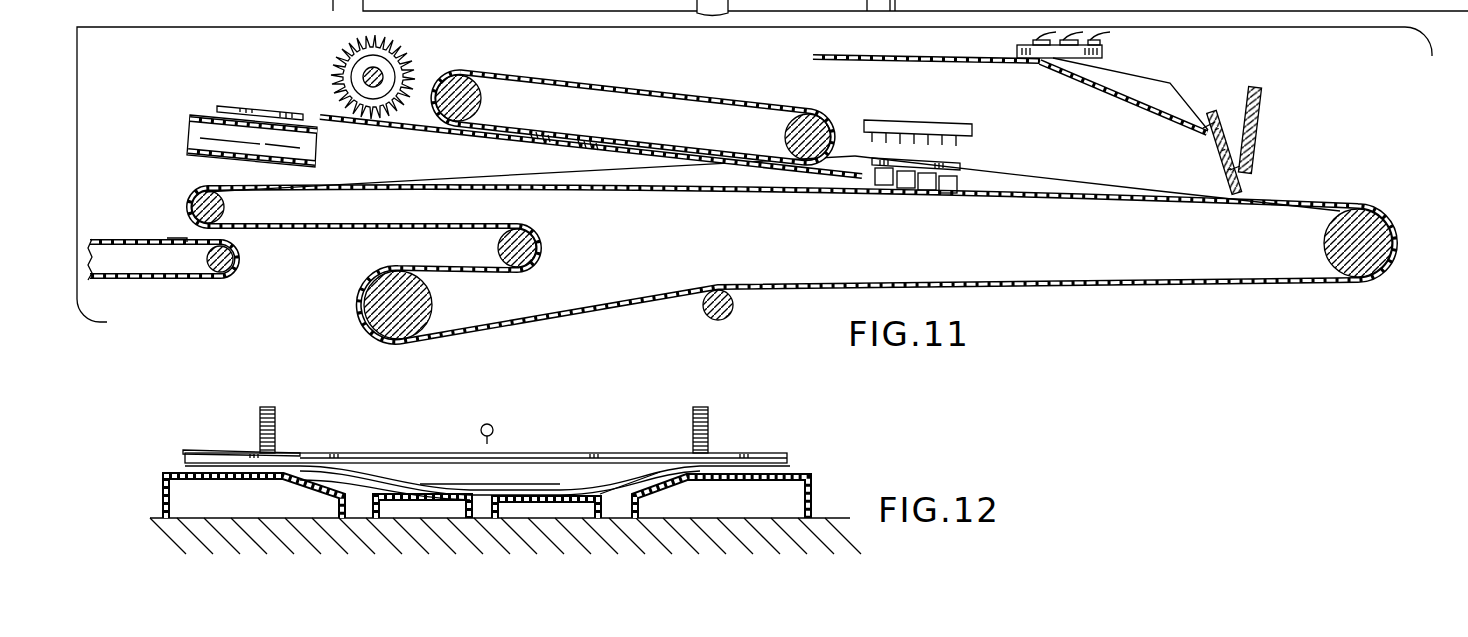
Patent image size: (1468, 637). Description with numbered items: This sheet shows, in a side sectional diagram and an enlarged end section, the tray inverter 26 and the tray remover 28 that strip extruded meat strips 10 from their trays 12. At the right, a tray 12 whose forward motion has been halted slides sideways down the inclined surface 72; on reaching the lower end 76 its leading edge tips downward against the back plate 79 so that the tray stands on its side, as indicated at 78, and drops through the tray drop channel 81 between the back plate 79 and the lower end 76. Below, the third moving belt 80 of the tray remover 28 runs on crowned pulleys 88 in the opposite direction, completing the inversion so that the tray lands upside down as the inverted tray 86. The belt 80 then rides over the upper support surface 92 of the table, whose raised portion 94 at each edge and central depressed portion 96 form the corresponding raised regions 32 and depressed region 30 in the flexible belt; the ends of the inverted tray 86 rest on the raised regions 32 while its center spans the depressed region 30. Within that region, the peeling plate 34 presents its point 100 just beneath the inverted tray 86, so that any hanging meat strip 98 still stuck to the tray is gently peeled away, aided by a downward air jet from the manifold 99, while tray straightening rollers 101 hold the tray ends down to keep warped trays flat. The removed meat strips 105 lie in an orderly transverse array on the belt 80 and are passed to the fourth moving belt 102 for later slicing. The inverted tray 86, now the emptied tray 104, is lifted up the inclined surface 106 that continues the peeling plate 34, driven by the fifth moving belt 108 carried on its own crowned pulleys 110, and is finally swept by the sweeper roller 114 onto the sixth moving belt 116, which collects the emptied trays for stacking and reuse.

In FIG. 11, the meat strips 10 is at (1090, 45).
In FIG. 11, the tray 12 is at (1030, 50).
In FIG. 11, the tray inverter 26 is at (1192, 62).
In FIG. 11, the tray remover 28 is at (802, 103).
In FIG. 12, the depressed region 30 is at (514, 506).
In FIG. 12, the raised regions 32 is at (218, 480).
In FIG. 11, the peeling plate 34 is at (845, 165).
In FIG. 12, the peeling plate 34 is at (512, 468).
In FIG. 11, the inclined surface 72 is at (1126, 92).
In FIG. 11, the lower end 76 is at (1210, 136).
In FIG. 11, the tipped tray position 78 is at (1232, 176).
In FIG. 11, the back plate 79 is at (1262, 106).
In FIG. 11, the third moving belt 80 is at (1067, 284).
In FIG. 11, the tray drop channel 81 is at (1228, 128).
In FIG. 11, the inverted tray 86 is at (938, 160).
In FIG. 12, the inverted tray 86 is at (308, 452).
In FIG. 11, the crowned pulleys 88 is at (1336, 266).
In FIG. 12, the upper support surface 92 is at (640, 482).
In FIG. 12, the raised portion 94 is at (230, 470).
In FIG. 12, the depressed portion 96 is at (402, 492).
In FIG. 12, the hanging meat strip 98 is at (436, 492).
In FIG. 11, the manifold 99 is at (916, 120).
In FIG. 12, the manifold 99 is at (488, 423).
In FIG. 12, the point 100 is at (487, 478).
In FIG. 12, the tray straightening rollers 101 is at (692, 412).
In FIG. 11, the fourth moving belt 102 is at (134, 240).
In FIG. 11, the emptied tray 104 is at (236, 106).
In FIG. 11, the removed meat strips 105 is at (200, 190).
In FIG. 11, the inclined surface 106 is at (420, 124).
In FIG. 11, the fifth moving belt 108 is at (650, 96).
In FIG. 11, the crowned pulleys 110 is at (483, 101).
In FIG. 11, the sweeper roller 114 is at (336, 56).
In FIG. 11, the sixth moving belt 116 is at (196, 112).